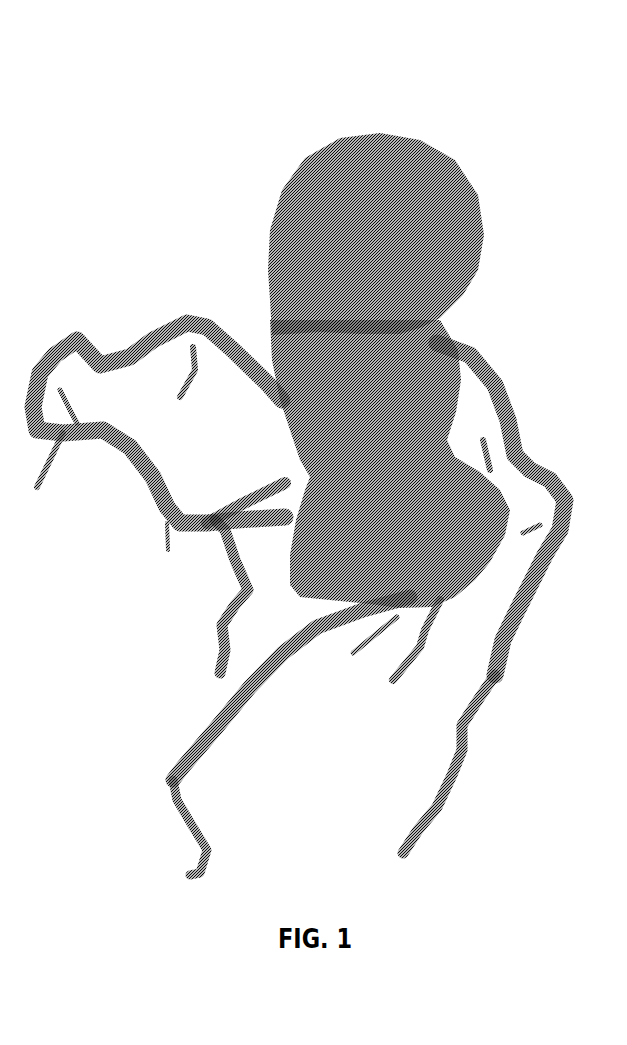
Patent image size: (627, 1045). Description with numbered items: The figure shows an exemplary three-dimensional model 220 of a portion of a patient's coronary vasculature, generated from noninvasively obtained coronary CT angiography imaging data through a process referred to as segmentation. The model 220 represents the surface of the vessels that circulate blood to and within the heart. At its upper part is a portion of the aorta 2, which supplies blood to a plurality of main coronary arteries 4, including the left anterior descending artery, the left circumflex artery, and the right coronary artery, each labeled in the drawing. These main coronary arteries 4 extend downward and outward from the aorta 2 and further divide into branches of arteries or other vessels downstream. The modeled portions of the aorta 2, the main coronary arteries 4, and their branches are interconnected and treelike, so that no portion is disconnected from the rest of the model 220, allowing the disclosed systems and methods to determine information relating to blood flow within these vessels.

The three-dimensional model 220 is at (305, 453).
The aorta 2 is at (480, 297).
The main coronary arteries 4 is at (127, 355).